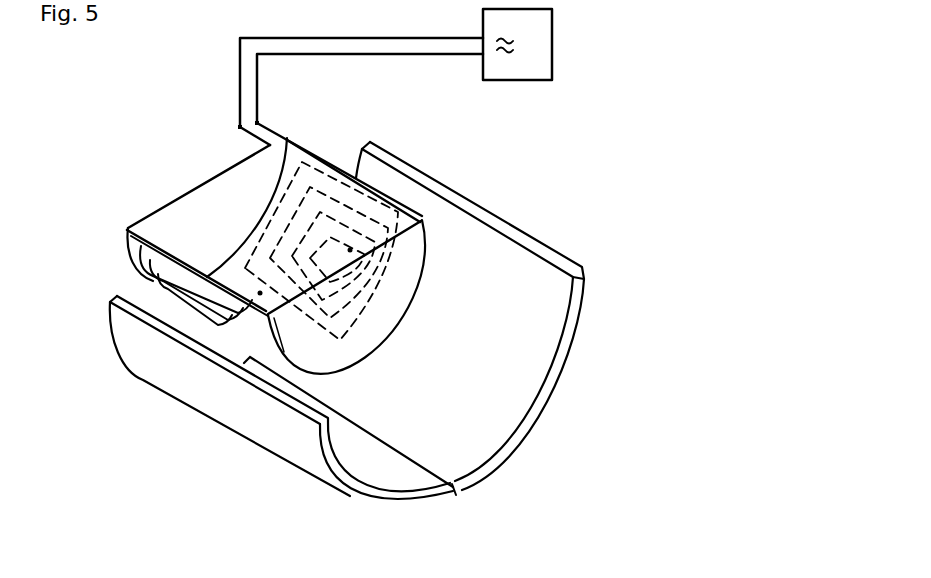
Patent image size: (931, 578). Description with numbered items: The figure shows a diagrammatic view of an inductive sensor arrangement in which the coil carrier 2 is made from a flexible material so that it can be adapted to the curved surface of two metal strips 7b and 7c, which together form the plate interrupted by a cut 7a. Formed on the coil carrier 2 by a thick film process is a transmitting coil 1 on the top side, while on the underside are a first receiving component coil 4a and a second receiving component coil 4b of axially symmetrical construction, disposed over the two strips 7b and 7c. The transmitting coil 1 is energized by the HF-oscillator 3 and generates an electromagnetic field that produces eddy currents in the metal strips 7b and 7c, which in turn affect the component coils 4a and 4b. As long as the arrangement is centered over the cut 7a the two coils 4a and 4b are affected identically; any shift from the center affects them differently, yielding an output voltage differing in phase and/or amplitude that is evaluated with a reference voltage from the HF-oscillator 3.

The transmitting coil 1 is at (215, 177).
The coil carrier 2 is at (261, 229).
The HF-oscillator 3 is at (517, 44).
The first receiving component coil 4a is at (142, 268).
The second receiving component coil 4b is at (390, 278).
The cut 7a is at (457, 493).
The metal strip 7b is at (215, 407).
The metal strip 7c is at (558, 359).